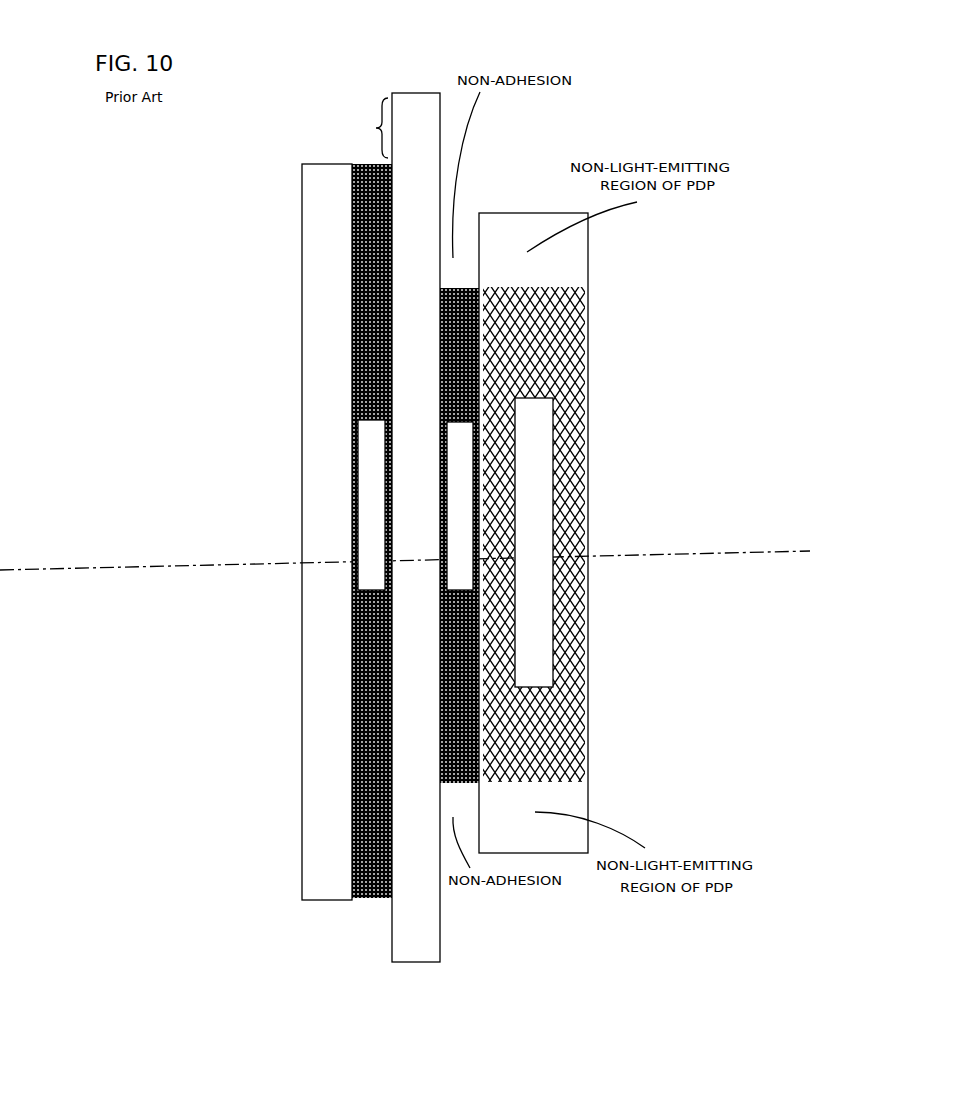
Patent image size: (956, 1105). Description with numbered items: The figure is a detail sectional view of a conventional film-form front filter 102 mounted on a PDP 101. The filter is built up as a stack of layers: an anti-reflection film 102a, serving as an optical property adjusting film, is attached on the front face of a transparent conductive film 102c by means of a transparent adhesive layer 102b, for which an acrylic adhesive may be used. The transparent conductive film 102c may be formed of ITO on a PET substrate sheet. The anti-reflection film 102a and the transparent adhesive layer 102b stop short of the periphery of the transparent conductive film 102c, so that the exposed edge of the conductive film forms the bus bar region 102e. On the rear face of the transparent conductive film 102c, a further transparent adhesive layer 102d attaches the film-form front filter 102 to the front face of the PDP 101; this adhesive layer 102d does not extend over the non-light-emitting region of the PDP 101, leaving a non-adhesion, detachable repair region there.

The PDP 101 is at (524, 212).
The film-form front filter 102 is at (437, 70).
The anti-reflection film 102a is at (332, 308).
The transparent adhesive layer 102b is at (355, 270).
The transparent conductive film 102c is at (408, 232).
The transparent adhesive layer 102d is at (470, 287).
The bus bar region 102e is at (358, 127).